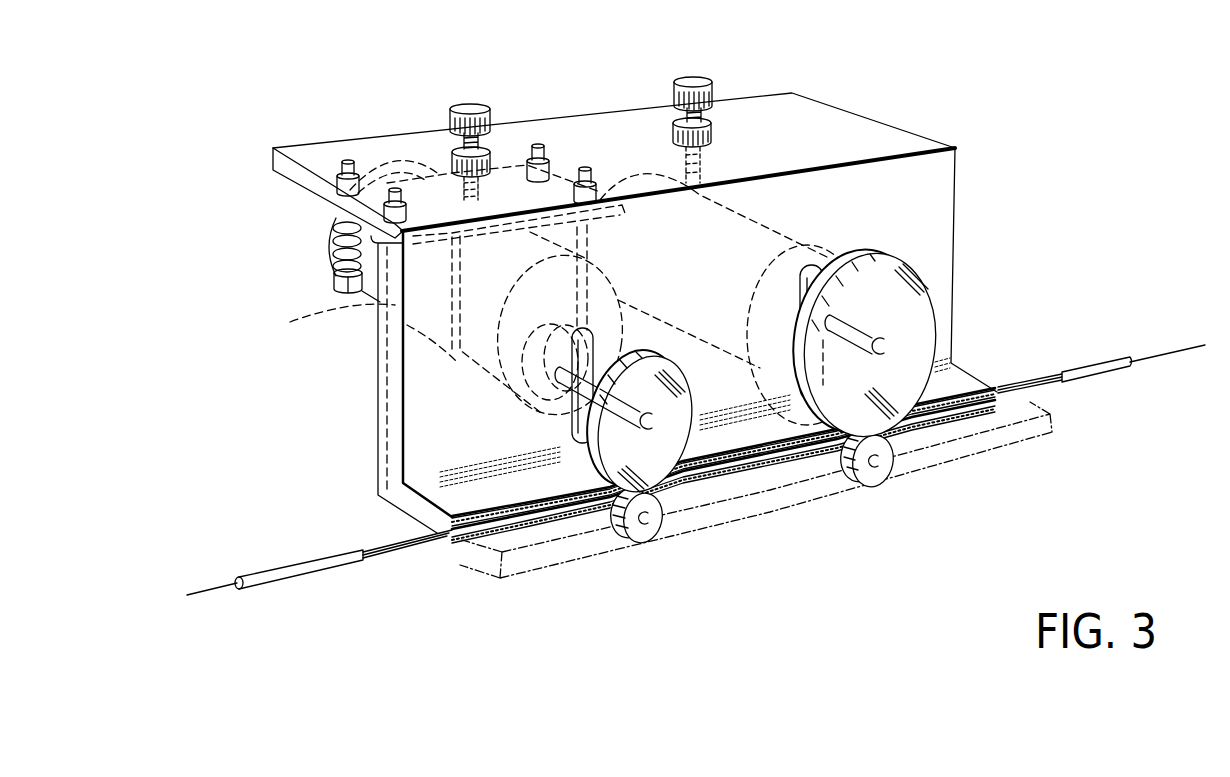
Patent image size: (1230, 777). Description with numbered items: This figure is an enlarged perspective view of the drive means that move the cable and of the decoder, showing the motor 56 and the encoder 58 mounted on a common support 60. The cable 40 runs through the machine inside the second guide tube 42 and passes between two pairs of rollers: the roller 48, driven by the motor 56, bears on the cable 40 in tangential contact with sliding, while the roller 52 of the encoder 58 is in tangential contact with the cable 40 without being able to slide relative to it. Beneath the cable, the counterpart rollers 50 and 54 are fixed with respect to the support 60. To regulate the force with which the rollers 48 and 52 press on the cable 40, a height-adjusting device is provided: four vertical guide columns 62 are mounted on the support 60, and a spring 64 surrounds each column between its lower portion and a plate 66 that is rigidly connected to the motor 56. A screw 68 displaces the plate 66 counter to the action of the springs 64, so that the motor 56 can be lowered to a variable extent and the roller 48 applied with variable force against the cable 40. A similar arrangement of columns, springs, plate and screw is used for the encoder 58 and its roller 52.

The cable 40 is at (197, 590).
The second guide tube 42 is at (288, 568).
The roller 48 is at (657, 363).
The counterpart roller 50 is at (645, 532).
The roller 52 is at (905, 285).
The counterpart roller 54 is at (875, 478).
The motor 56 is at (460, 367).
The encoder 58 is at (786, 246).
The support 60 is at (905, 138).
The vertical guide column 62 is at (338, 277).
The spring 64 is at (330, 234).
The plate 66 is at (390, 155).
The screw 68 is at (478, 106).